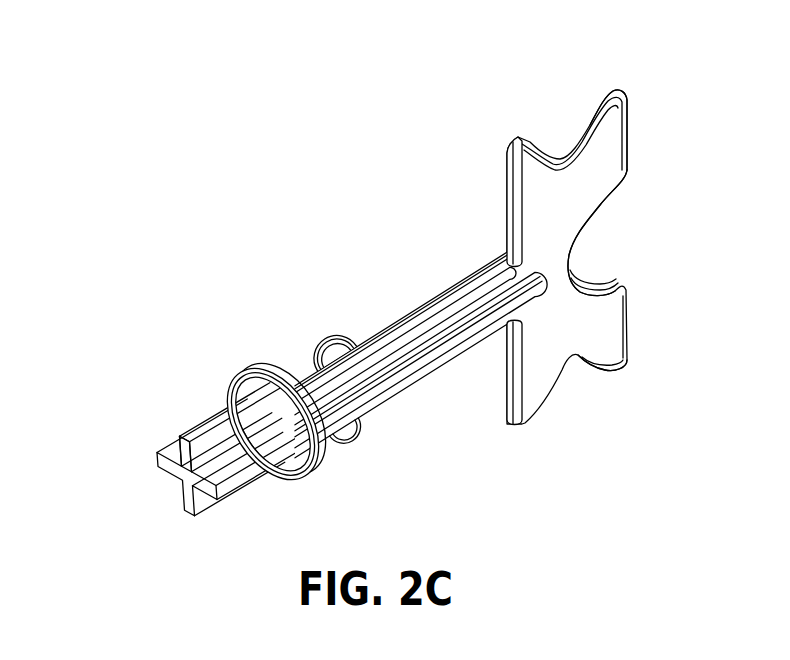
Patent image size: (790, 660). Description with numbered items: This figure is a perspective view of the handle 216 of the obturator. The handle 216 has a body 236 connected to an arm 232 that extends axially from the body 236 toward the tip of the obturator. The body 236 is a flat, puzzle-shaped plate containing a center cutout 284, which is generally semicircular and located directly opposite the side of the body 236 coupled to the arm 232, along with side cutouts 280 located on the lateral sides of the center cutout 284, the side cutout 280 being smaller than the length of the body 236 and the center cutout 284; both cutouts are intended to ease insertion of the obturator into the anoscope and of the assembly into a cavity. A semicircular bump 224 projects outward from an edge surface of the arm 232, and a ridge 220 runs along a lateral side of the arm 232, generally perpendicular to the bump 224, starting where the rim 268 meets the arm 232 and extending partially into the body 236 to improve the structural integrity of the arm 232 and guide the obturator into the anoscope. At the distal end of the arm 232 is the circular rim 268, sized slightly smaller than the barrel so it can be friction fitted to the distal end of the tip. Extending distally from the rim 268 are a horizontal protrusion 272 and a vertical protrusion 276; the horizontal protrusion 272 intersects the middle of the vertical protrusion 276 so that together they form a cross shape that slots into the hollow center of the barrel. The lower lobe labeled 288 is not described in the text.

The handle 216 is at (148, 124).
The ridge 220 is at (412, 372).
The bump 224 is at (322, 332).
The arm 232 is at (400, 312).
The body 236 is at (519, 140).
The rim 268 is at (272, 367).
The horizontal protrusion 272 is at (166, 450).
The vertical protrusion 276 is at (183, 487).
The side cutout 280 is at (560, 135).
The center cutout 284 is at (598, 238).
The lower lobe 288 is at (581, 372).